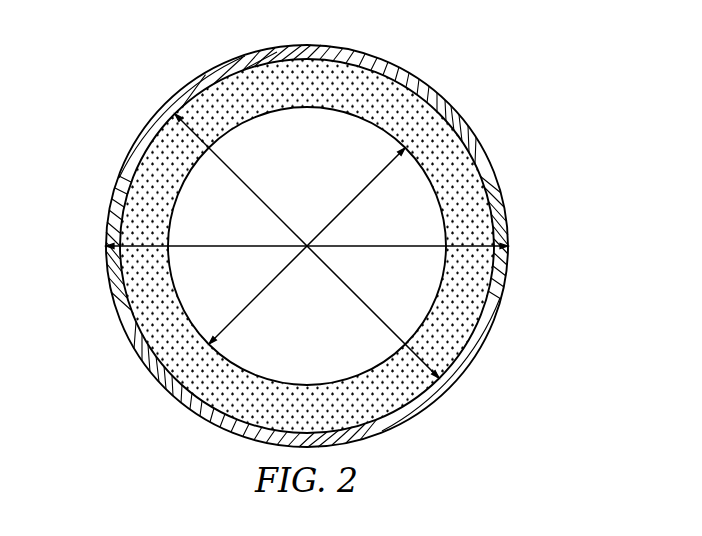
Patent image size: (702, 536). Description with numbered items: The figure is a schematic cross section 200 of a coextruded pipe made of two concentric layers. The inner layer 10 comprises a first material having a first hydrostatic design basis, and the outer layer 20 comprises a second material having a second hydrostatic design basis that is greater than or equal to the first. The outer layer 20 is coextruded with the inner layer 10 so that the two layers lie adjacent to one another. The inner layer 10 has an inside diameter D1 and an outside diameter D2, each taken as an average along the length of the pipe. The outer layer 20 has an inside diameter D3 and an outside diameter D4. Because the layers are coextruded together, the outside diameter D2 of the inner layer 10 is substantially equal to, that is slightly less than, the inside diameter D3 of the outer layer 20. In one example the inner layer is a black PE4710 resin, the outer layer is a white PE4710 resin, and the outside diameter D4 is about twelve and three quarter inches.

The schematic cross section 200 is at (301, 241).
The outer layer 20 is at (128, 177).
The inner layer 10 is at (140, 213).
The inside diameter of inner layer D1 is at (359, 194).
The outside diameter of inner layer D2 is at (307, 246).
The inside diameter of outer layer D3 is at (366, 305).
The outside diameter of outer layer D4 is at (258, 247).